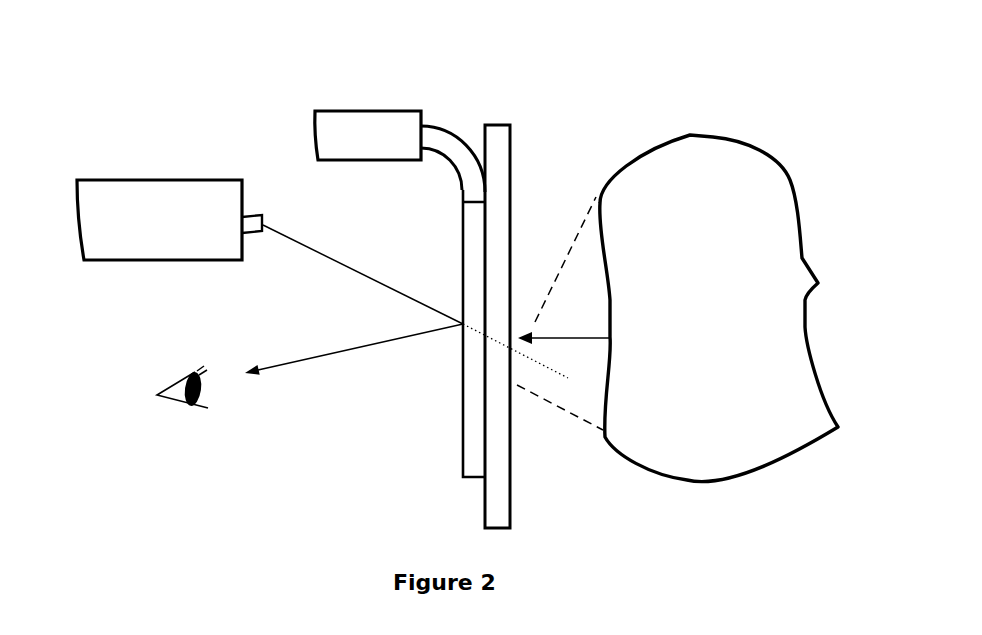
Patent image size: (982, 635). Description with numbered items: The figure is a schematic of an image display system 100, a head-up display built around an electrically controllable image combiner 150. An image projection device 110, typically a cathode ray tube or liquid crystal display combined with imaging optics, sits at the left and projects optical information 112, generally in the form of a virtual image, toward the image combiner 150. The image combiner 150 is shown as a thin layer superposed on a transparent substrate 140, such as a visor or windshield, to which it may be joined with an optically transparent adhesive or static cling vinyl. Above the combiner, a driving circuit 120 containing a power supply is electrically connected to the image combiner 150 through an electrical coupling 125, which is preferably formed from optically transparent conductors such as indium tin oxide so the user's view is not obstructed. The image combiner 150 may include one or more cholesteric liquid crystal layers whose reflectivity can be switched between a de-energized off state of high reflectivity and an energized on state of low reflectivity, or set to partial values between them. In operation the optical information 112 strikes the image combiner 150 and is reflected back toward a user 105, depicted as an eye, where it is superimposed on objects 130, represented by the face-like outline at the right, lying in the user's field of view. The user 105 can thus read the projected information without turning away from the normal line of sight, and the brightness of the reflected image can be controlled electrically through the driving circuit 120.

The image display system 100 is at (180, 63).
The user 105 is at (168, 382).
The image projection device 110 is at (79, 181).
The optical information 112 is at (340, 265).
The driving circuit 120 is at (317, 110).
The electrical coupling 125 is at (435, 124).
The objects 130 is at (714, 135).
The transparent substrate 140 is at (486, 527).
The image combiner 150 is at (463, 478).